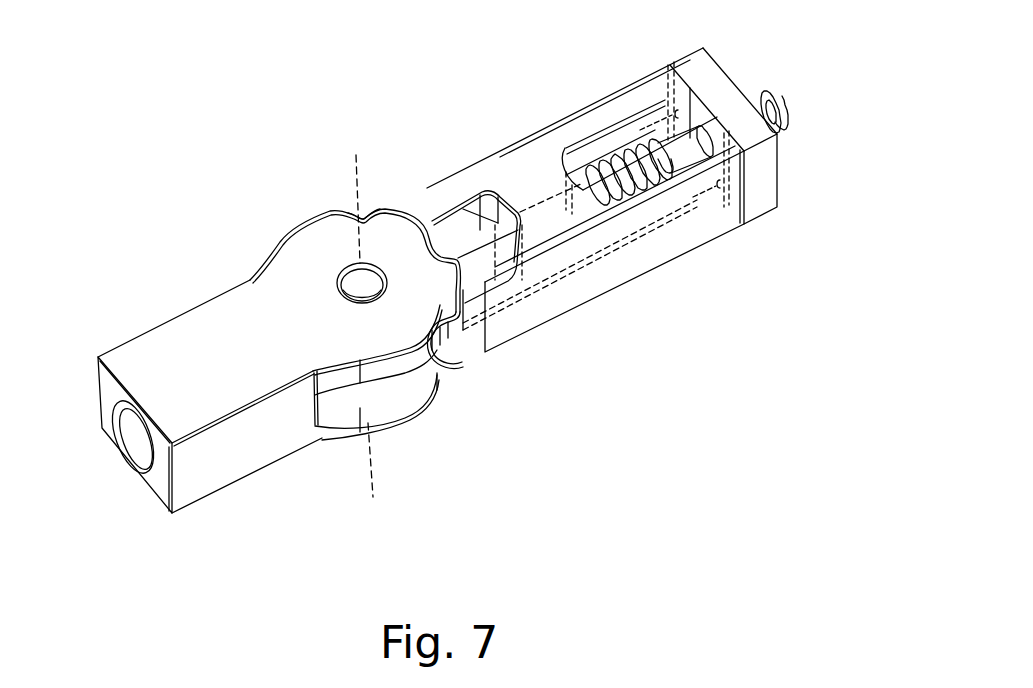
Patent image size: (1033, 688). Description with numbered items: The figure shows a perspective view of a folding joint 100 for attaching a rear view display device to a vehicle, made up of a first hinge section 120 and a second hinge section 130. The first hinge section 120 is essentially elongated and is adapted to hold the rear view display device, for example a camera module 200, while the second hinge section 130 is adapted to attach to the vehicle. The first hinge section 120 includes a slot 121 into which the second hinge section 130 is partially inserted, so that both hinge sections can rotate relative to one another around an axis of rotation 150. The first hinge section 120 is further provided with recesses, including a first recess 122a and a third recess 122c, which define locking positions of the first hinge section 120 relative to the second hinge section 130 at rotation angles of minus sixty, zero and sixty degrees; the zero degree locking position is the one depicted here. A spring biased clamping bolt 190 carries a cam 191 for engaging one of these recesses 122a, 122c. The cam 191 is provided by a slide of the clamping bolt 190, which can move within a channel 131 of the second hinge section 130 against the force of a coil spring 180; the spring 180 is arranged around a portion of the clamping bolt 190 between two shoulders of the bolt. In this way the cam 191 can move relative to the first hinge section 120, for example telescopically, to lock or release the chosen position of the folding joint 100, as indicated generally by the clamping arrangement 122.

The folding joint 100 is at (190, 222).
The first hinge section 120 is at (208, 463).
The slot 121 is at (333, 412).
The clamping plate 122 is at (467, 343).
The first recess 122a is at (425, 258).
The third recess 122c is at (363, 203).
The second hinge section 130 is at (572, 90).
The channel 131 is at (650, 117).
The axis of rotation 150 is at (373, 497).
The coil spring 180 is at (658, 188).
The clamping bolt 190 is at (680, 140).
The cam 191 is at (453, 228).
The camera module 200 is at (123, 447).